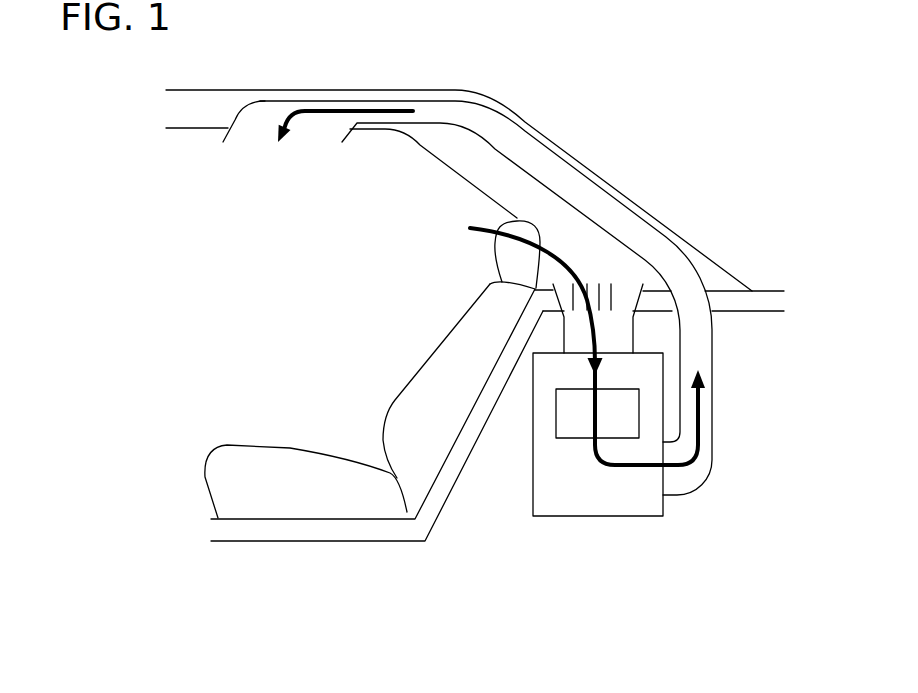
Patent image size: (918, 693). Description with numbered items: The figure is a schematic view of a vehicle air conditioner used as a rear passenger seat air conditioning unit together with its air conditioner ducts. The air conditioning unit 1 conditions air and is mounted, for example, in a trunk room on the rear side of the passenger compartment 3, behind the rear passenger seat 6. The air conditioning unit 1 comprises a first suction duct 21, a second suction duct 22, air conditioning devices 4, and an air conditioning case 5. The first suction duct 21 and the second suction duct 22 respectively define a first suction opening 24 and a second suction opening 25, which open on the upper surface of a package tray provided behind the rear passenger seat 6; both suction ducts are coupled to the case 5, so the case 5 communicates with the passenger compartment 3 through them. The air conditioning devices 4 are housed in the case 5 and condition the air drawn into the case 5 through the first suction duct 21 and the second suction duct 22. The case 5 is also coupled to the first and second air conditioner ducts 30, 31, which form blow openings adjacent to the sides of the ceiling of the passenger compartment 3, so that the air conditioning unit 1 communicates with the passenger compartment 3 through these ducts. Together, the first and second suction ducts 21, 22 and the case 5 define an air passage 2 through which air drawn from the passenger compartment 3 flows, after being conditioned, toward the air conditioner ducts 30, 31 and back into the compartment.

The air conditioning unit 1 is at (566, 470).
The air passage 2 is at (593, 423).
The passenger compartment 3 is at (250, 279).
The air conditioning devices 4 is at (556, 422).
The air conditioning case 5 is at (597, 517).
The rear passenger seat 6 is at (422, 378).
The first suction duct 21 is at (642, 301).
The second suction duct 22 is at (633, 338).
The first suction opening 24 is at (694, 245).
The second suction opening 25 is at (617, 280).
The first air conditioner duct 30 is at (537, 298).
The second air conditioner duct 31 is at (713, 396).